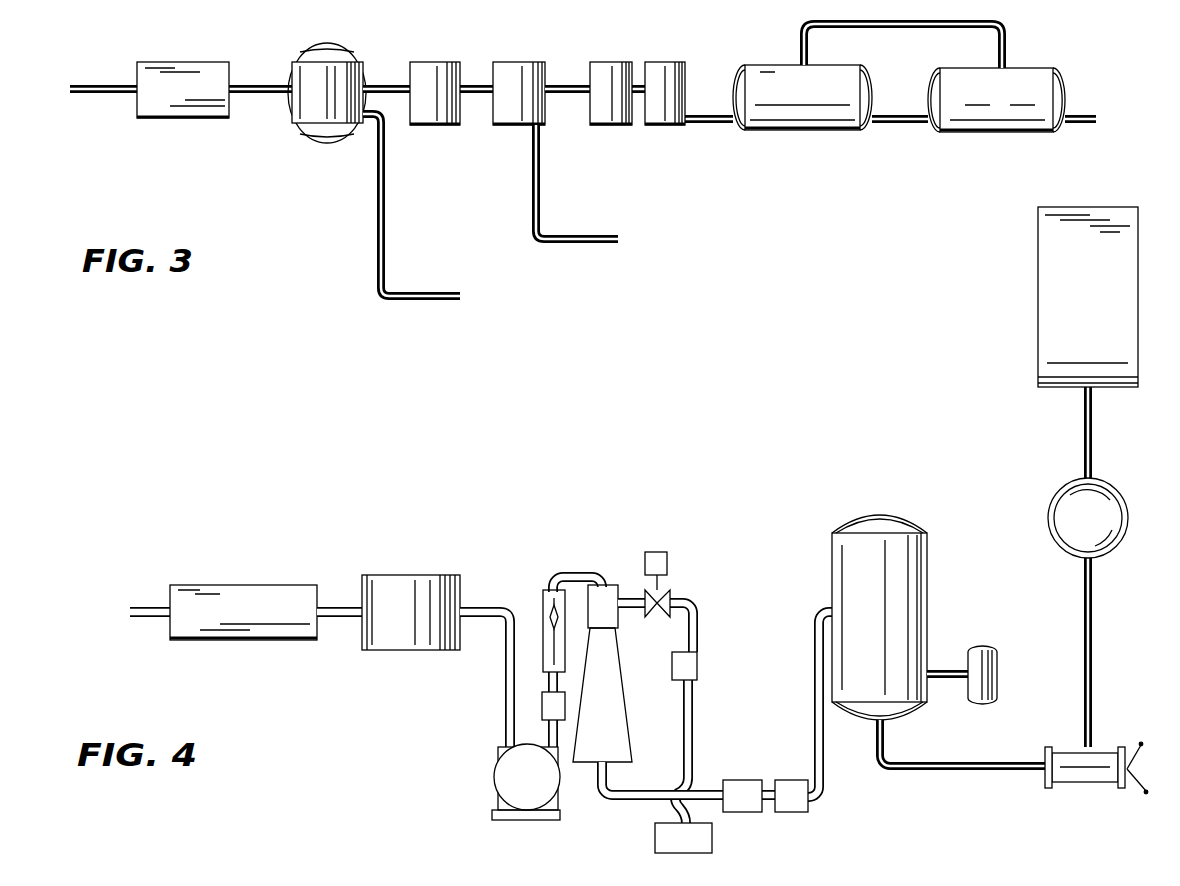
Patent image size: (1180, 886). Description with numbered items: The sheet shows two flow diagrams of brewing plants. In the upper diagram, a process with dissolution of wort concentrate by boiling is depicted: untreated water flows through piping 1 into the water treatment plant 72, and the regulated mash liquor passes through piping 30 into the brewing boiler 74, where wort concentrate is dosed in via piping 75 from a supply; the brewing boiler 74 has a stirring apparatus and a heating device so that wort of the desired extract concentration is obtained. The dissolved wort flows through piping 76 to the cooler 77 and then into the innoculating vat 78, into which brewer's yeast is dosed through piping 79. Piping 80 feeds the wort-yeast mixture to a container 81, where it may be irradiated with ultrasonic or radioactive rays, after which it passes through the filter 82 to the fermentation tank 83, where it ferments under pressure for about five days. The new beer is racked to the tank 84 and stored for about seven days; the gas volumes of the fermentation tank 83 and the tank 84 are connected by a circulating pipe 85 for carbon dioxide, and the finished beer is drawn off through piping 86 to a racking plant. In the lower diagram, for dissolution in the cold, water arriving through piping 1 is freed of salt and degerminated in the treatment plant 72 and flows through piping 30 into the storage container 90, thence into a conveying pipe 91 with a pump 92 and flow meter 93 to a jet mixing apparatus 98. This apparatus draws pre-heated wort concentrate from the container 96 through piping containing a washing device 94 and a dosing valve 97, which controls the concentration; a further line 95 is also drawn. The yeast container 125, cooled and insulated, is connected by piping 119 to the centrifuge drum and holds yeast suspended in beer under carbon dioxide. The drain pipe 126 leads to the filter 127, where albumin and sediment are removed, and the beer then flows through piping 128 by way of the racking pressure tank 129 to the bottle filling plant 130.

In FIG. 4, the piping 1 is at (147, 616).
In FIG. 3, the piping 30 is at (263, 92).
In FIG. 4, the piping 30 is at (340, 618).
In FIG. 3, the water treatment plant 72 is at (195, 72).
In FIG. 4, the water treatment plant 72 is at (278, 590).
In FIG. 3, the brewing boiler 74 is at (352, 37).
In FIG. 3, the piping 75 is at (378, 262).
In FIG. 3, the piping 76 is at (395, 97).
In FIG. 3, the cooler 77 is at (453, 113).
In FIG. 3, the innoculating vat 78 is at (528, 48).
In FIG. 3, the piping 79 is at (585, 243).
In FIG. 3, the piping 80 is at (570, 97).
In FIG. 3, the container 81 is at (607, 70).
In FIG. 3, the filter 82 is at (665, 115).
In FIG. 3, the fermentation tank 83 is at (815, 120).
In FIG. 3, the tank 84 is at (985, 118).
In FIG. 3, the circulating pipe 85 is at (908, 26).
In FIG. 3, the piping 86 is at (1083, 125).
In FIG. 4, the storage container 90 is at (412, 580).
In FIG. 4, the conveying pipe 91 is at (484, 620).
In FIG. 4, the pump 92 is at (503, 778).
In FIG. 4, the flow meter 93 is at (548, 605).
In FIG. 4, the washing device 94 is at (699, 657).
In FIG. 4, the conduit 95 is at (826, 797).
In FIG. 4, the container 96 is at (712, 845).
In FIG. 4, the dosing valve 97 is at (668, 566).
In FIG. 4, the jet mixing apparatus 98 is at (617, 713).
In FIG. 4, the piping 119 is at (947, 668).
In FIG. 4, the container 125 is at (997, 686).
In FIG. 4, the drain pipe 126 is at (884, 747).
In FIG. 4, the filter 127 is at (1101, 754).
In FIG. 4, the piping 128 is at (1090, 640).
In FIG. 4, the racking pressure tank 129 is at (1106, 494).
In FIG. 4, the bottle filling plant 130 is at (1038, 305).